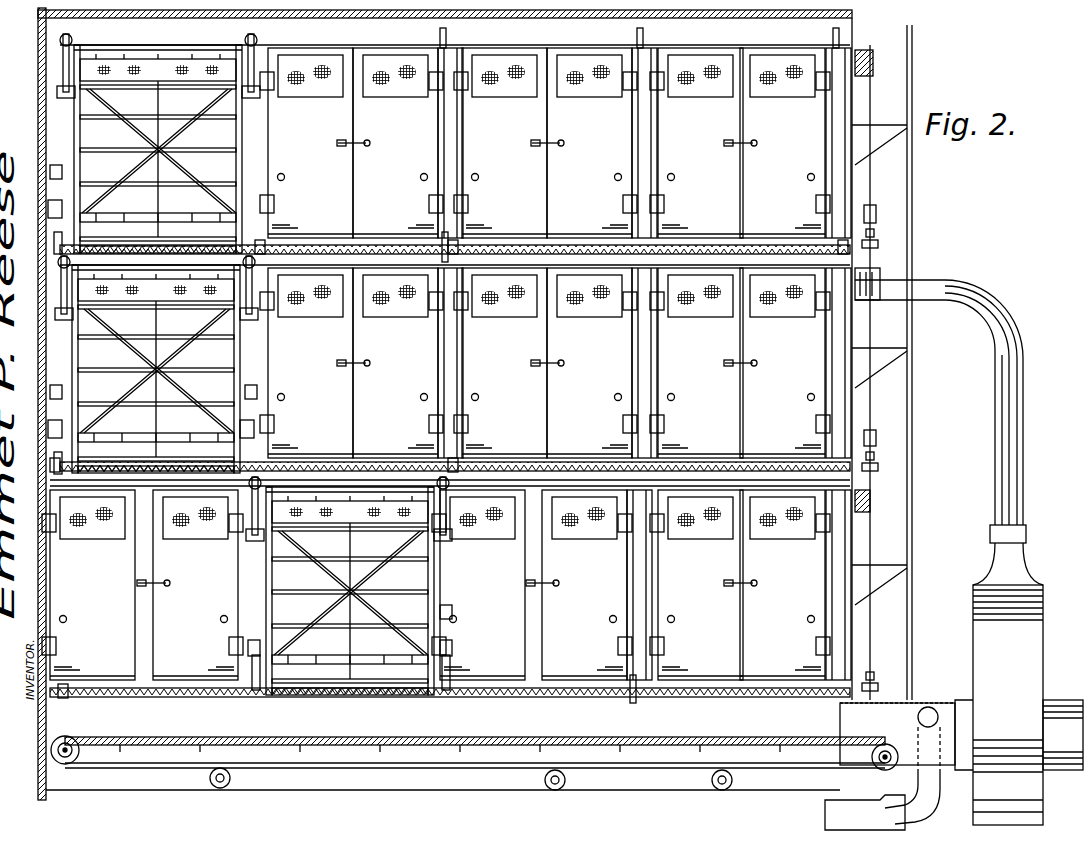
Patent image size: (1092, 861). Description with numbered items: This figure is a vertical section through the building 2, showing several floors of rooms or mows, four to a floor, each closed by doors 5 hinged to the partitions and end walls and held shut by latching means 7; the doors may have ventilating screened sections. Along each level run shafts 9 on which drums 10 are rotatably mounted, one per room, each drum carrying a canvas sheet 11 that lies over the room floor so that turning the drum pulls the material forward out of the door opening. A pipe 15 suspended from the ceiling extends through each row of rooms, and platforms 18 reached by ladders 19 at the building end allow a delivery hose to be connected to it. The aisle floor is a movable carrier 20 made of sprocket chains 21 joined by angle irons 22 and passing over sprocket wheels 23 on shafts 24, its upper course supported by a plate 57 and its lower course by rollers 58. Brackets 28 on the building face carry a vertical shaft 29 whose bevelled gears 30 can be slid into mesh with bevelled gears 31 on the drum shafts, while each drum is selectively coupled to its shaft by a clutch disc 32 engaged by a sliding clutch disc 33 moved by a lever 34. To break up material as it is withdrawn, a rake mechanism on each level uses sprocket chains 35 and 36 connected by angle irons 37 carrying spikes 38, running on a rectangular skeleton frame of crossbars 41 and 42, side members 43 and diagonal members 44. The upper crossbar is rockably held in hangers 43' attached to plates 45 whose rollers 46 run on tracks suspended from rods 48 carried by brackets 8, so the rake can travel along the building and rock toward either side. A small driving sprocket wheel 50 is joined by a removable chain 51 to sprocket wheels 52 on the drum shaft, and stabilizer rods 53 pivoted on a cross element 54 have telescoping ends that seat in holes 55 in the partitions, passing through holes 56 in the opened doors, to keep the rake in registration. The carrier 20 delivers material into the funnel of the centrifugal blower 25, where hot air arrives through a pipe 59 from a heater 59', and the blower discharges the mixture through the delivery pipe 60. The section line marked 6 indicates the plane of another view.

The building 2 is at (30, 518).
The doors 5 is at (430, 140).
The section line 6 is at (370, 608).
The latching means 7 is at (548, 142).
The brackets 8 is at (52, 236).
The shafts 9 is at (655, 242).
The drums 10 is at (462, 258).
The canvas sheet 11 is at (508, 243).
The pipe 15 is at (868, 50).
The platforms 18 is at (875, 124).
The ladders 19 is at (913, 460).
The movable carrier 20 is at (700, 732).
The sprocket chains 21 is at (580, 736).
The angle irons 22 is at (540, 737).
The sprocket wheels 23 is at (80, 752).
The shafts 24 is at (70, 762).
The centrifugal blower 25 is at (1028, 672).
The brackets 28 is at (876, 214).
The vertical shaft 29 is at (871, 404).
The bevelled gears 30 is at (874, 233).
The bevelled gears 31 is at (878, 246).
The clutch disc 32 is at (660, 258).
The clutch disc 33 is at (462, 670).
The lever 34 is at (262, 258).
The sprocket chain 35 is at (74, 126).
The sprocket chain 36 is at (258, 112).
The angle irons 37 is at (230, 144).
The spikes 38 is at (160, 55).
The crossbar 41 is at (194, 92).
The crossbar 42 is at (148, 212).
The side members 43 is at (252, 358).
The hangers 43' is at (239, 326).
The diagonal members 44 is at (108, 112).
The plates 45 is at (58, 52).
The wheels or rollers 46 is at (72, 42).
The rods 48 is at (440, 36).
The driving sprocket wheel 50 is at (48, 208).
The chain 51 is at (256, 660).
The sprocket wheels 52 is at (462, 243).
The stabilizer rods 53 is at (50, 170).
The cross element 54 is at (124, 180).
The holes 55 is at (470, 176).
The holes 56 is at (485, 176).
The plate 57 is at (470, 745).
The rollers 58 is at (400, 798).
The pipe 59 is at (897, 768).
The heater 59' is at (847, 812).
The delivery pipe 60 is at (1024, 366).